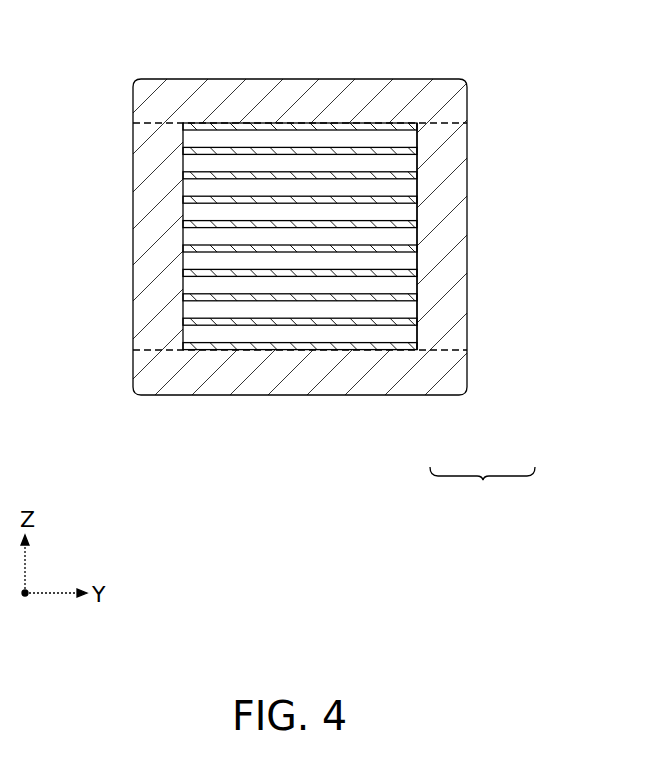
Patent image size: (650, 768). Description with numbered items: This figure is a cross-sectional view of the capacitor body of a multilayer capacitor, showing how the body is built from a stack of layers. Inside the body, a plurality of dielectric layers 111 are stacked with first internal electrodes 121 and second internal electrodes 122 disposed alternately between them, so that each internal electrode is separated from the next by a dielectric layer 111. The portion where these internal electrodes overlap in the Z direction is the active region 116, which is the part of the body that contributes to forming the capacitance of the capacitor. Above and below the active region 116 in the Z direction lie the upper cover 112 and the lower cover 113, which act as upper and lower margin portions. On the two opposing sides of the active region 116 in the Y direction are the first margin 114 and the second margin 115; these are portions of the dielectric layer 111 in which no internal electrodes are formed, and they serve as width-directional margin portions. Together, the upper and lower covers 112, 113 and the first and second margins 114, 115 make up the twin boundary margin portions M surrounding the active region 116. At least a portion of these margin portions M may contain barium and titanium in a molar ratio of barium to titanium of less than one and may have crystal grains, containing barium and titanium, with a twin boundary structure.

The dielectric layer 111 is at (345, 137).
The upper cover 112 is at (193, 93).
The lower cover 113 is at (193, 380).
The first margin 114 is at (150, 202).
The second margin 115 is at (450, 193).
The active region 116 is at (417, 237).
The first internal electrode 121 is at (238, 123).
The second internal electrode 122 is at (295, 147).
The twin boundary margin portions M is at (481, 470).